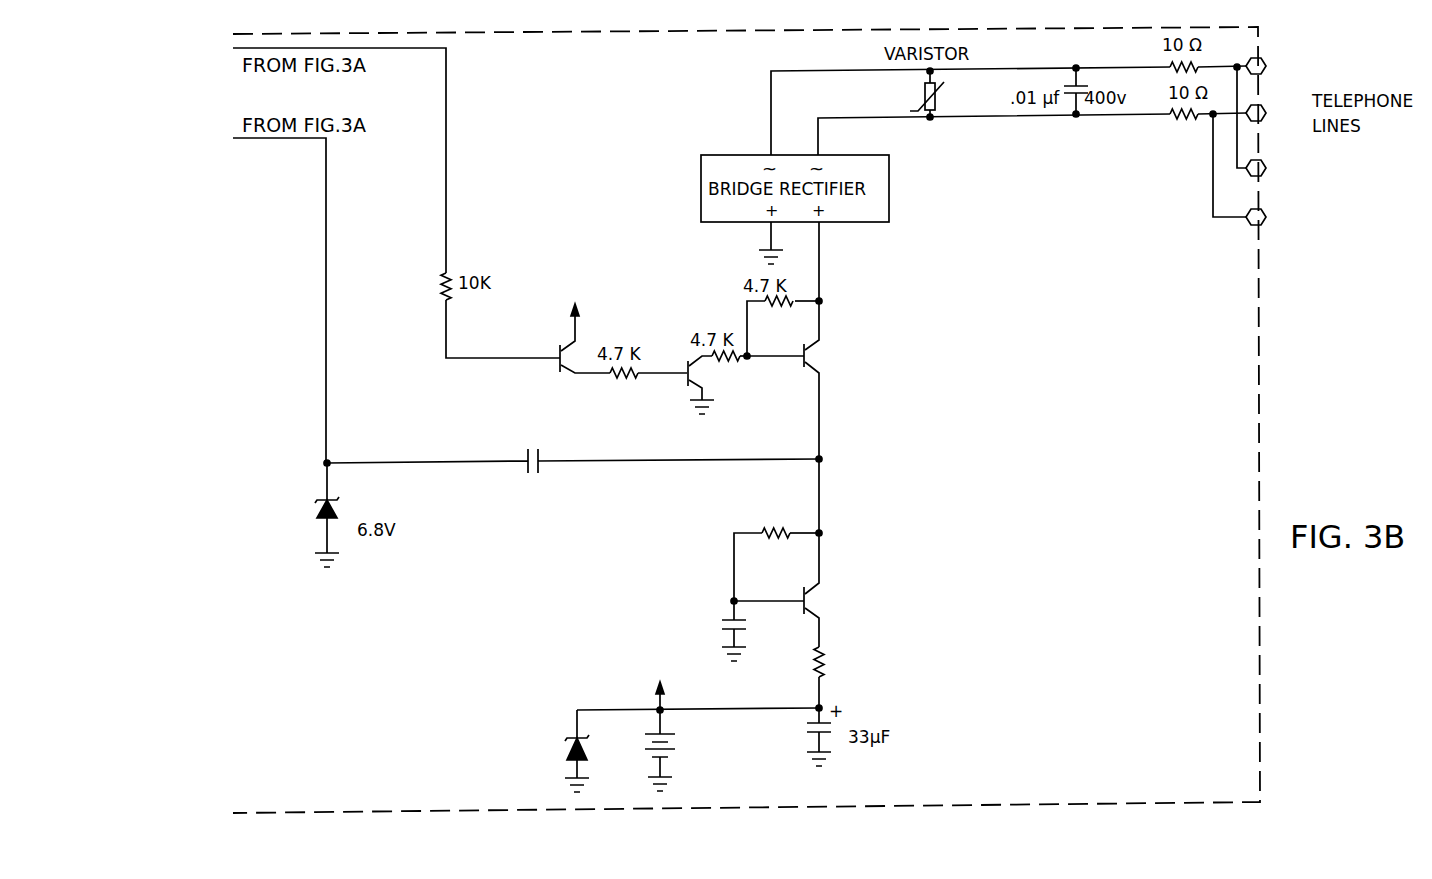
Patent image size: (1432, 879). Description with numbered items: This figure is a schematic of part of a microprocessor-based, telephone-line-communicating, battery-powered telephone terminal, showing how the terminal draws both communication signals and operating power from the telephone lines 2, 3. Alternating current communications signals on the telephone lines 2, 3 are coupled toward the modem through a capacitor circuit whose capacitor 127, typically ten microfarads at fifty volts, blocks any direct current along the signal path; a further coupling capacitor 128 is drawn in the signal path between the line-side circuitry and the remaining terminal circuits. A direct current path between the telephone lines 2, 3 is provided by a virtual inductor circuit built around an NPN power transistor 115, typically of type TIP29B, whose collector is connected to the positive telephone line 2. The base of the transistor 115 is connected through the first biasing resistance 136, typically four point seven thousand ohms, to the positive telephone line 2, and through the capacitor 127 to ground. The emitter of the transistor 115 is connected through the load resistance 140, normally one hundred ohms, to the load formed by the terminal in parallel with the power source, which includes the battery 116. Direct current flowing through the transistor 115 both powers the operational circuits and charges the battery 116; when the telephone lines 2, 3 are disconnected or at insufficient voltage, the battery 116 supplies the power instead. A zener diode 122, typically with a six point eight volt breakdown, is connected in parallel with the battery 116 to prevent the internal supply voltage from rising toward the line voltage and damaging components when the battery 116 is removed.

The telephone line 2 is at (1266, 68).
The telephone line 3 is at (1266, 115).
The coupling capacitor 128 is at (540, 453).
The first biasing resistance 136 is at (764, 538).
The NPN power transistor 115 is at (812, 608).
The capacitor 127 is at (722, 620).
The load resistance 140 is at (825, 668).
The battery 116 is at (666, 758).
The zener diode 122 is at (575, 740).